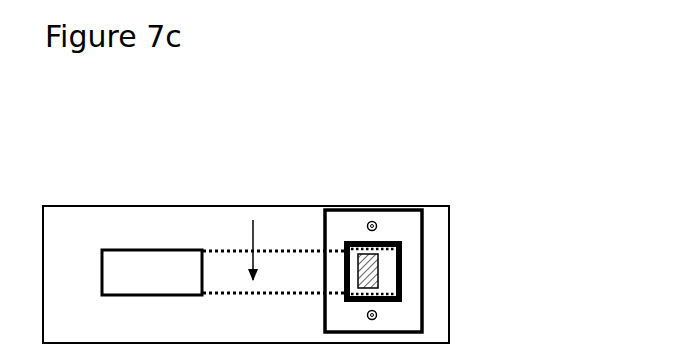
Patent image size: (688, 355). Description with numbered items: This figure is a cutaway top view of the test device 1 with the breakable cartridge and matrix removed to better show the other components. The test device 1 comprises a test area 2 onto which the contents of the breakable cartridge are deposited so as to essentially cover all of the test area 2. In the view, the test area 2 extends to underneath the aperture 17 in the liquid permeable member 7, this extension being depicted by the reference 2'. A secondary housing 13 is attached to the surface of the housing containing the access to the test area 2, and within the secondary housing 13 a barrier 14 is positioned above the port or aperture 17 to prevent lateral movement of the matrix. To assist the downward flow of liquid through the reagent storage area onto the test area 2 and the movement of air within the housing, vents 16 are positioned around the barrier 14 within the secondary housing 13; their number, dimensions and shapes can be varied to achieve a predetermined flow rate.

The test device 1 is at (77, 235).
The test area 2 is at (152, 226).
The test area extension 2' is at (274, 208).
The liquid permeable member 7 is at (355, 241).
The secondary housing 13 is at (425, 223).
The barrier 14 is at (403, 257).
The vents 16 is at (378, 224).
The aperture 17 is at (368, 280).